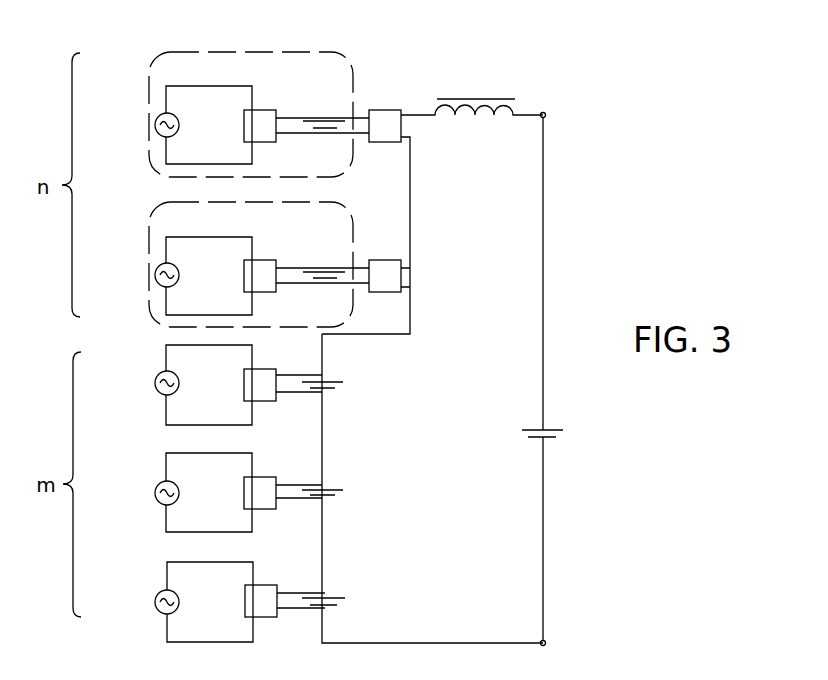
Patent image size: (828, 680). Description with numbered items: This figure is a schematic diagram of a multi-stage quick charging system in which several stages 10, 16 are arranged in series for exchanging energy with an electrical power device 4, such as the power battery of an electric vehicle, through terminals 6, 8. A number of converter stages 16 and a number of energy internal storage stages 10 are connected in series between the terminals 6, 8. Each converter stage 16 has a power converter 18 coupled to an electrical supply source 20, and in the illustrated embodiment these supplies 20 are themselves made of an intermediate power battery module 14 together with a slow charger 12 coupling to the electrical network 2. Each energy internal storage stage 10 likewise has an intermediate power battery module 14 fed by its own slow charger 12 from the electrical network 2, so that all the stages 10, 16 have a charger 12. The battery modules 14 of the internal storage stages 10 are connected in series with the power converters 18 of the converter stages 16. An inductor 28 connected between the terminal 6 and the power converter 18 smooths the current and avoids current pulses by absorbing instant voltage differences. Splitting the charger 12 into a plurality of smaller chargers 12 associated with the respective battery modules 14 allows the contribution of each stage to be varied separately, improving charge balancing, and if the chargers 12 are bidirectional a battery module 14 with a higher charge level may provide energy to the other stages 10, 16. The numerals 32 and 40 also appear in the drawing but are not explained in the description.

The electrical network 2 is at (156, 123).
The electrical power device 4 is at (553, 428).
The terminal 6 is at (546, 112).
The terminal 8 is at (545, 645).
The energy internal storage stage 10 is at (288, 632).
The slow charger 12 is at (260, 363).
The intermediate power battery module 14 is at (313, 270).
The converter stage 16 is at (379, 182).
The power converter 18 is at (387, 93).
The electrical supply source 20 is at (180, 57).
The inductor 28 is at (487, 98).
The controller 32 is at (131, 672).
The sensor 40 is at (42, 672).